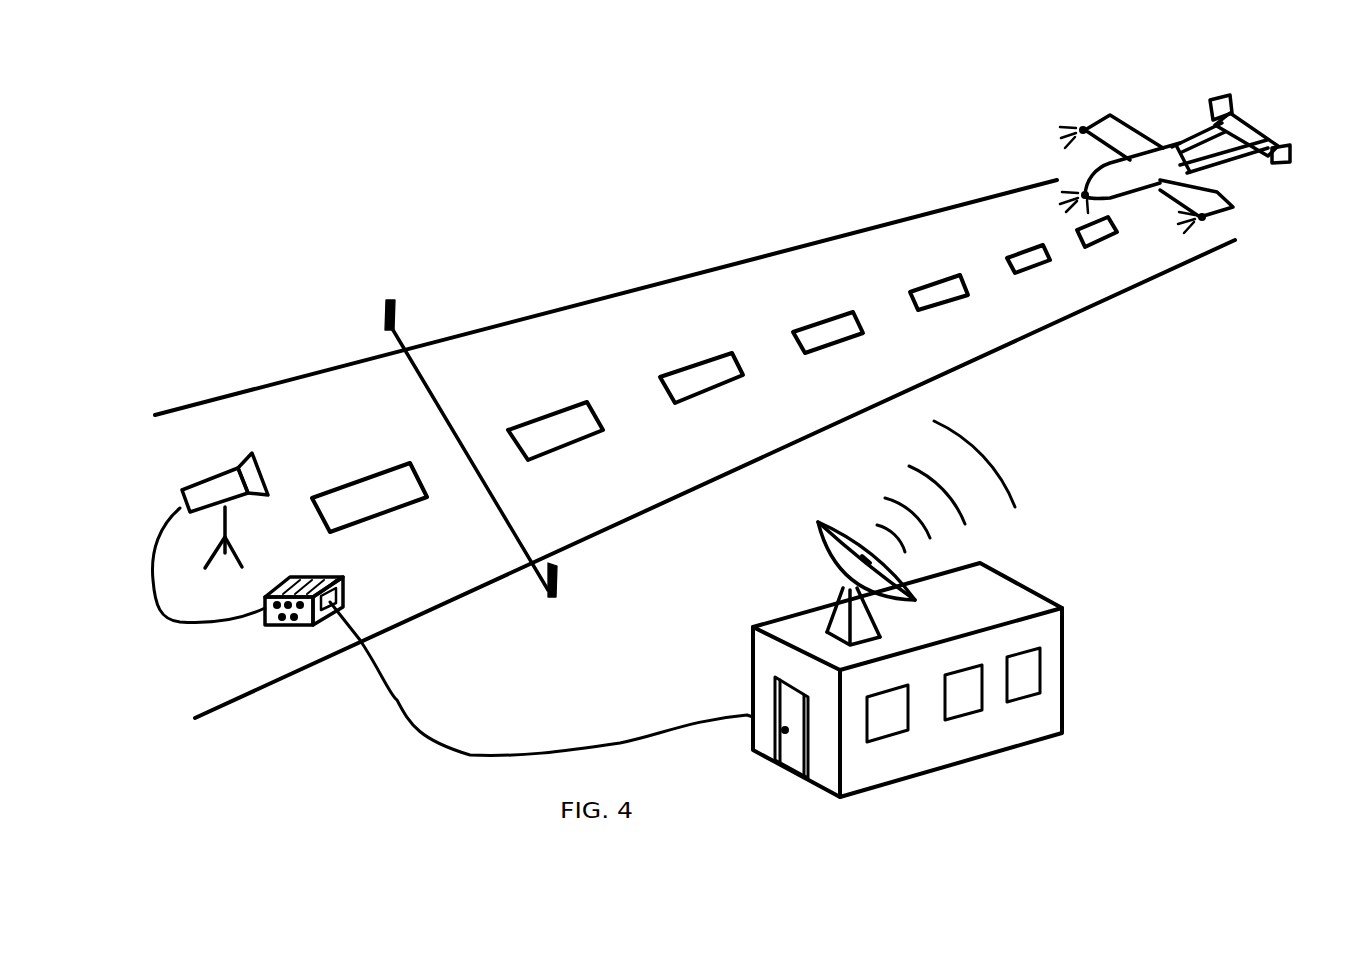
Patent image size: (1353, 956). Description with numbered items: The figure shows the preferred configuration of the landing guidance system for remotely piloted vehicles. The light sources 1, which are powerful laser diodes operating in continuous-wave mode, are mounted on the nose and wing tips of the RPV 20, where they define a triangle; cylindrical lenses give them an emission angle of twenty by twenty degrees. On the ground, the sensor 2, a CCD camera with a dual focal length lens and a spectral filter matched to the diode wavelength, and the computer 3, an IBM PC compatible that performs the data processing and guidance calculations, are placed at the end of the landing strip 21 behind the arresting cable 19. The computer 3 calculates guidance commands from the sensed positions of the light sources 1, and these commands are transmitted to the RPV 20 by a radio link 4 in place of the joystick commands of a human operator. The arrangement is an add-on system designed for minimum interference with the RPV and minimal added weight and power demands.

The light sources 1 is at (1082, 129).
The sensor 2 is at (243, 462).
The computer 3 is at (344, 598).
The radio link 4 is at (1047, 609).
The arresting cable 19 is at (502, 514).
The RPV 20 is at (1222, 165).
The landing strip 21 is at (940, 363).